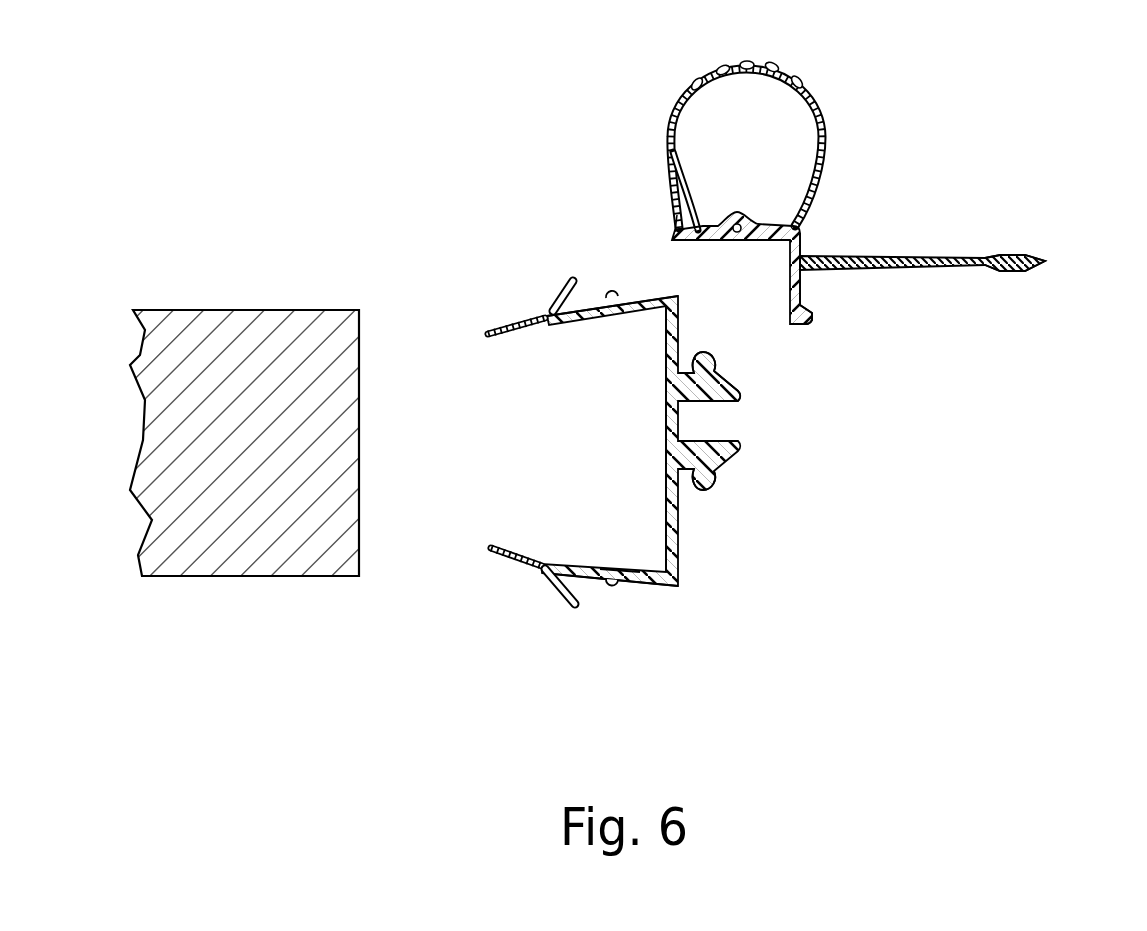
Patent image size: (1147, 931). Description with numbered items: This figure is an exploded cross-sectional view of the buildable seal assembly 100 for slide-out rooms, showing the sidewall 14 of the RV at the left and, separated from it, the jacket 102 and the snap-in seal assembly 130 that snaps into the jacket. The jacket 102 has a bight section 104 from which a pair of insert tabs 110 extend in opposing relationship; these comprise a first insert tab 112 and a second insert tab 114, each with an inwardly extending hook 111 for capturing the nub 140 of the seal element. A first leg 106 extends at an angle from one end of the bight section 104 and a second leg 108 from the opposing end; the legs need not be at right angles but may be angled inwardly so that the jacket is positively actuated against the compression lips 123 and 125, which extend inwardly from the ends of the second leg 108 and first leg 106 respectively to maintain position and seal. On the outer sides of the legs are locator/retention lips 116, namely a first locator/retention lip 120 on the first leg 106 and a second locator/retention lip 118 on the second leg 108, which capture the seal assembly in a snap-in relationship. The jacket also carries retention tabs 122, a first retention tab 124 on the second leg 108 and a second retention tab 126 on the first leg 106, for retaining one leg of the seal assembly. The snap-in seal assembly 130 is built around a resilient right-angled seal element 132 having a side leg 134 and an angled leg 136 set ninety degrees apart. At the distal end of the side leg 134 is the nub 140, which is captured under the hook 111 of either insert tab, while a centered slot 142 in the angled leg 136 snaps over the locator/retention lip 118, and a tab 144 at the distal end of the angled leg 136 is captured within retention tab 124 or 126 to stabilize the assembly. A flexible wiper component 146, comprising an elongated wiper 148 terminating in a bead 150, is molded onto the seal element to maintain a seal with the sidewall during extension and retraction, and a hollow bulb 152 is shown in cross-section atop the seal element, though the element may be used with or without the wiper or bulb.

The sidewall 14 is at (158, 454).
The buildable seal assembly 100 is at (882, 163).
The jacket 102 is at (700, 590).
The bight section 104 is at (683, 524).
The first leg 106 is at (652, 588).
The second leg 108 is at (650, 300).
The insert tabs 110 is at (744, 393).
The hook 111 is at (692, 362).
The first insert tab 112 is at (718, 375).
The second insert tab 114 is at (707, 440).
The locator/retention lips 116 is at (619, 635).
The second locator/retention lip 118 is at (611, 292).
The first locator/retention lip 120 is at (612, 590).
The retention tabs 122 is at (550, 620).
The compression lip 123 is at (512, 322).
The first retention tab 124 is at (564, 287).
The compression lip 125 is at (526, 551).
The second retention tab 126 is at (553, 594).
The snap-in seal assembly 130 is at (868, 110).
The right-angled seal element 132 is at (836, 225).
The side leg 134 is at (802, 273).
The angled leg 136 is at (675, 229).
The nub 140 is at (810, 317).
The slot 142 is at (737, 234).
The tab 144 is at (670, 233).
The wiper component 146 is at (985, 174).
The elongated wiper 148 is at (990, 254).
The bead 150 is at (1042, 258).
The bulb 152 is at (773, 66).